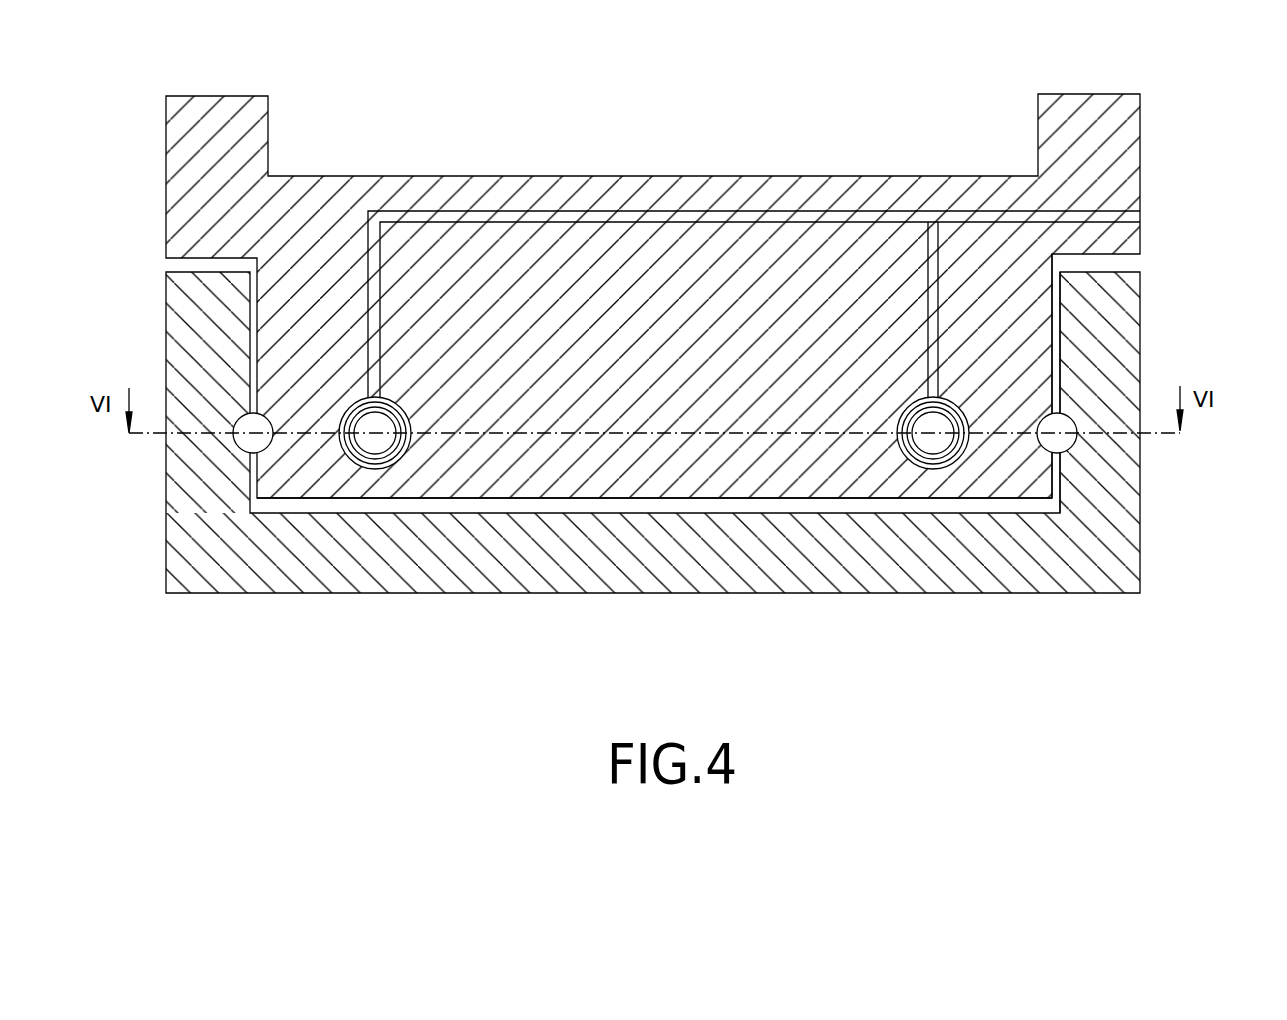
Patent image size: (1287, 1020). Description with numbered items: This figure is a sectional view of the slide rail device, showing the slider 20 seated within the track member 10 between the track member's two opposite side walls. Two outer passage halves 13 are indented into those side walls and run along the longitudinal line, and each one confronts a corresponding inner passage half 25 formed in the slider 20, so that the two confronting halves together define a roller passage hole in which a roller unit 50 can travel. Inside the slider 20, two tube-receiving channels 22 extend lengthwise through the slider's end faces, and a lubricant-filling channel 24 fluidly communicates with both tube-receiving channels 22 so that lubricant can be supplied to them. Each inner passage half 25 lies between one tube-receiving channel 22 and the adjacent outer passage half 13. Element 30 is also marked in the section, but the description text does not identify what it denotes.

The track member 10 is at (1145, 532).
The outer passage half 13 is at (1073, 442).
The slider 20 is at (1145, 150).
The tube-receiving channel 22 is at (898, 443).
The lubricant-filling channel 24 is at (1143, 211).
The inner passage half 25 is at (1033, 437).
The cable 30 is at (410, 447).
The roller unit 50 is at (372, 452).